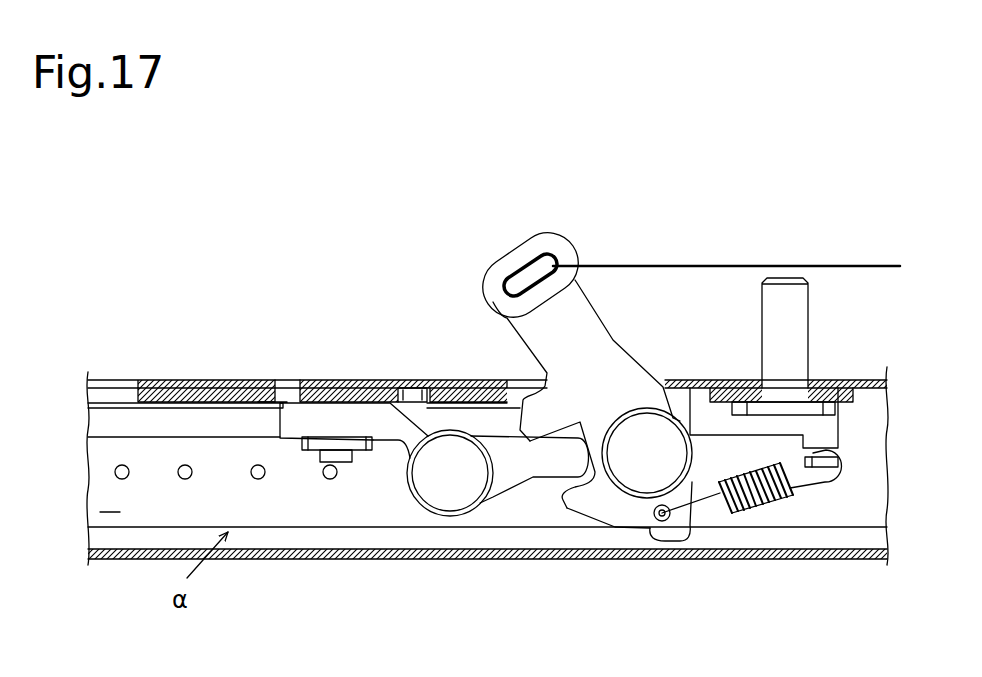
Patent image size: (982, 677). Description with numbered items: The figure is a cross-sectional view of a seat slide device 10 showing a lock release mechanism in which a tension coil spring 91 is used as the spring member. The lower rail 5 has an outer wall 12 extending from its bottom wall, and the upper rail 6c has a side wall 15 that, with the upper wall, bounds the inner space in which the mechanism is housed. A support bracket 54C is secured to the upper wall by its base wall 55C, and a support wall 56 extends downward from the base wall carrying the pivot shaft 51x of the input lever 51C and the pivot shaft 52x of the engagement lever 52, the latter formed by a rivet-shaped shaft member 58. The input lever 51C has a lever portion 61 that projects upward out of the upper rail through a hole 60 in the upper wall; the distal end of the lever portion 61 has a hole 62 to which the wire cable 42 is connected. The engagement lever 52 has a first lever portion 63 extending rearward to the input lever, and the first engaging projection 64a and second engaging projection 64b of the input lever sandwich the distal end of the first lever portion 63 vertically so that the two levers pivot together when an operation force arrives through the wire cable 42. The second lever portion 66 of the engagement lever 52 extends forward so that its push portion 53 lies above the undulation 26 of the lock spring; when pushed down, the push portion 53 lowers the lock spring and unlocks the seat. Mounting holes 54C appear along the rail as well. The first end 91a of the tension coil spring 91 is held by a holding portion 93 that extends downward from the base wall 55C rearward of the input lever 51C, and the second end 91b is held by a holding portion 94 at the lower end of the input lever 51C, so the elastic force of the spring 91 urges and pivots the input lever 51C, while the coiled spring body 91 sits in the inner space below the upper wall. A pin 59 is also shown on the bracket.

The fuel lid lock device (40C) 10 is at (163, 198).
The lower rail 5 is at (250, 560).
The outer wall 12 is at (148, 540).
The side wall 15 is at (120, 512).
The upper rail 6c is at (162, 380).
The base wall 55C is at (200, 398).
The second lever portion 66 is at (282, 432).
The support wall 56 is at (483, 418).
The support bracket 54C is at (152, 442).
The push portion 53 is at (303, 448).
The undulation 26 is at (328, 480).
The engagement lever 52 is at (510, 490).
The pivot shaft 52x is at (447, 500).
The shaft member 58 is at (413, 500).
The lever portion 61 is at (492, 262).
The hole 62 is at (543, 250).
The second engaging projection 64b is at (533, 381).
The input lever 51C is at (577, 250).
The first engaging projection 64a is at (573, 468).
The first lever portion 63 is at (600, 522).
The holding portion 94 is at (683, 520).
The pivot shaft 51x is at (645, 453).
The second end 91b is at (652, 521).
The wire cable 42 is at (833, 265).
The pin 59 is at (810, 318).
The hole 60 is at (702, 387).
The holding portion 93 is at (823, 487).
The first end 91a is at (847, 463).
The tension coil spring 91 is at (767, 507).